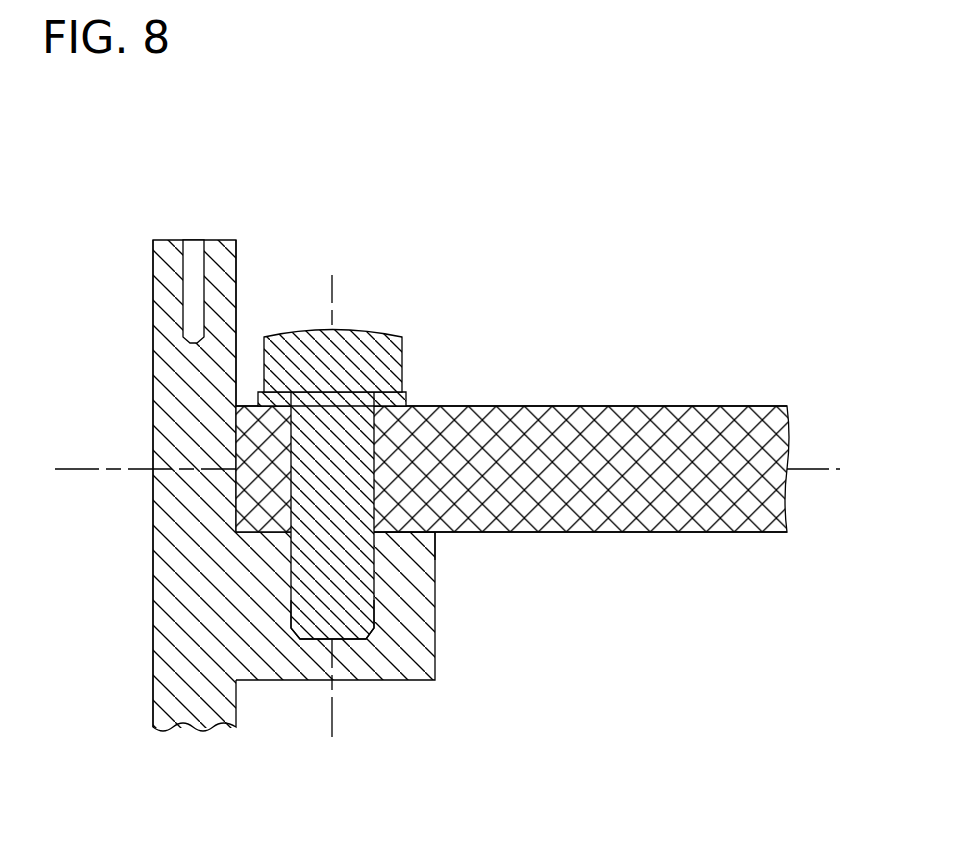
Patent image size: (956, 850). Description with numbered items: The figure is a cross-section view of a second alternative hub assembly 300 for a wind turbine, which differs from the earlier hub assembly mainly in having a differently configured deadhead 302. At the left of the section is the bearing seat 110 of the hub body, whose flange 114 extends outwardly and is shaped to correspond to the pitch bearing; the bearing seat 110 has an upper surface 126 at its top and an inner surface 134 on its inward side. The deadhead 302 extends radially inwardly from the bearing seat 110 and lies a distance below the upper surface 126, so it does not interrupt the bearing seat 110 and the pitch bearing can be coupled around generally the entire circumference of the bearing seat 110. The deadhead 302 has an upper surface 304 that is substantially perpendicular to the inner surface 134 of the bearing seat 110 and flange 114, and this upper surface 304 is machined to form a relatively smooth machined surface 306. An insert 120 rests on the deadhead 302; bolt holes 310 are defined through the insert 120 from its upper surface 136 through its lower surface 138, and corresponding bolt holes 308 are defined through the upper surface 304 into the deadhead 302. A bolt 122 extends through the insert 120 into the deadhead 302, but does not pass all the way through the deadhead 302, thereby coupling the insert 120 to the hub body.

The hub assembly 300 is at (709, 228).
The bearing seat 110 is at (165, 280).
The flange 114 is at (144, 320).
The upper surface of bearing seat 126 is at (218, 240).
The inner surface of bearing seat 134 is at (236, 287).
The deadhead 302 is at (388, 665).
The insert 120 is at (705, 425).
The upper surface of insert 136 is at (610, 406).
The lower surface of insert 138 is at (682, 532).
The machined surface 306 is at (412, 524).
The upper surface of deadhead 304 is at (437, 533).
The bolt holes of insert 310 is at (350, 448).
The bolt holes of deadhead 308 is at (353, 607).
The bolt 122 is at (376, 338).